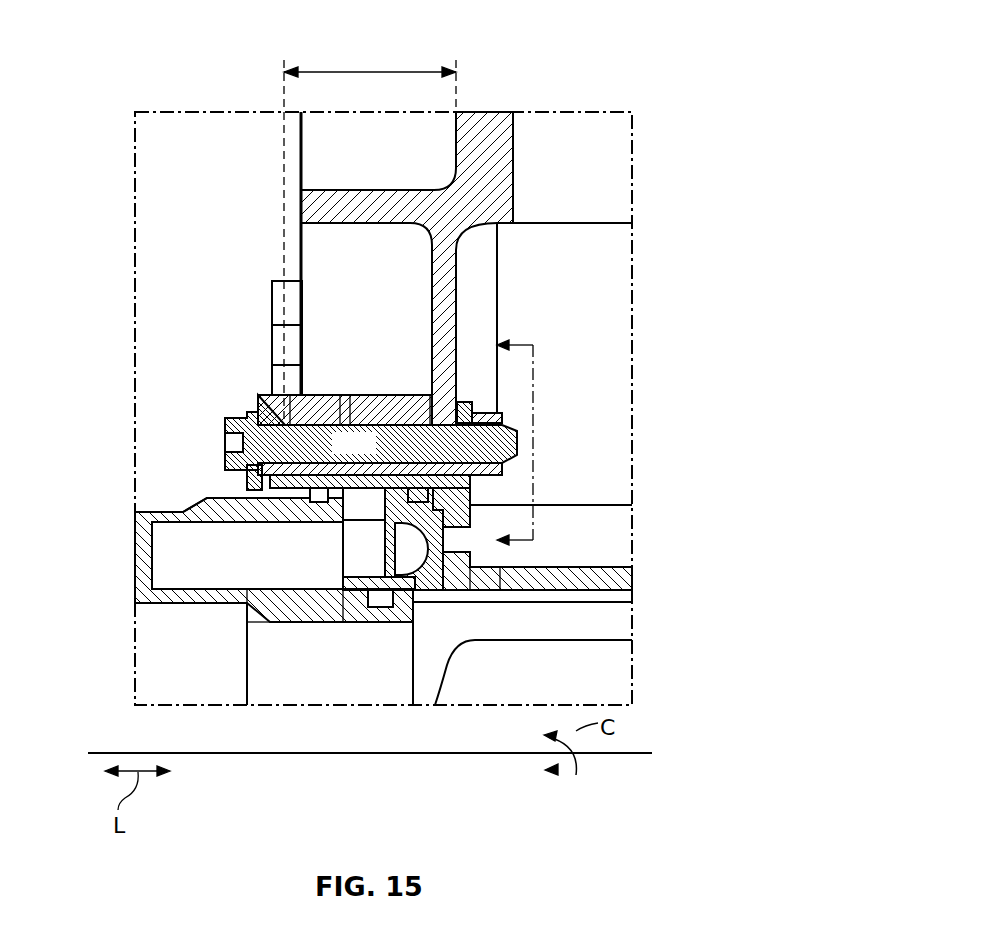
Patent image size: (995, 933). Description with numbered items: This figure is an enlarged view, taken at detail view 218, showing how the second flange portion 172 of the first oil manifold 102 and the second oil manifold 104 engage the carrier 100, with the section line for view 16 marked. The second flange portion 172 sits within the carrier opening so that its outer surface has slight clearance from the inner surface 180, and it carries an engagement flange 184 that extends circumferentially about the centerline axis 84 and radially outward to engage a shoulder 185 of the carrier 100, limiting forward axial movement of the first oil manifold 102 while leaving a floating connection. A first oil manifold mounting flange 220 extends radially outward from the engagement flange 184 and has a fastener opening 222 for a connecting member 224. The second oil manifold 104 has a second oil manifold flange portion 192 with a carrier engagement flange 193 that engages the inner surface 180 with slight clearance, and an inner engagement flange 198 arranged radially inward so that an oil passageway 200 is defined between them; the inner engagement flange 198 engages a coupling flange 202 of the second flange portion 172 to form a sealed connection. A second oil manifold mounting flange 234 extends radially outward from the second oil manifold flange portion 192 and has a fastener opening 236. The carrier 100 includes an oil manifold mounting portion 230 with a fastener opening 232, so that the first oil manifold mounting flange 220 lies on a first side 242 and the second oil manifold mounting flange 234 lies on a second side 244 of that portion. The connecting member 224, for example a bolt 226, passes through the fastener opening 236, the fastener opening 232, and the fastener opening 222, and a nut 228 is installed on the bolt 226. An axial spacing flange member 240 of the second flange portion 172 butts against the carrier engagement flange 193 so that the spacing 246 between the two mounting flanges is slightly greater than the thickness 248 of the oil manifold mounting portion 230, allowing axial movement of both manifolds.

The view 16- 16 is at (497, 448).
The centerline axis 84 is at (432, 752).
The carrier 100 is at (306, 207).
The first oil manifold 102 is at (615, 578).
The second oil manifold 104 is at (146, 660).
The second flange portion 172 is at (448, 570).
The inner surface 180 is at (342, 500).
The engagement flange 184 is at (462, 482).
The shoulder 185 is at (480, 572).
The second oil manifold flange portion 192 is at (200, 492).
The carrier engagement flange 193 is at (357, 518).
The inner engagement flange 198 is at (323, 612).
The oil passageway 200 is at (150, 562).
The coupling flange 202 is at (374, 606).
The detail view 218 is at (706, 36).
The first oil manifold mounting flange 220 is at (463, 405).
The fastener opening 222 is at (482, 412).
The connecting member 224 is at (229, 410).
The bolt 226 is at (320, 432).
The nut 228 is at (633, 372).
The oil manifold mounting portion 230 is at (316, 396).
The fastener opening 232 is at (366, 413).
The second oil manifold mounting flange 234 is at (243, 453).
The fastener opening 236 is at (266, 412).
The axial spacing flange member 240 is at (312, 594).
The first side 242 is at (456, 318).
The second side 244 is at (268, 482).
The spacing 246 is at (410, 457).
The thickness 248 is at (370, 71).